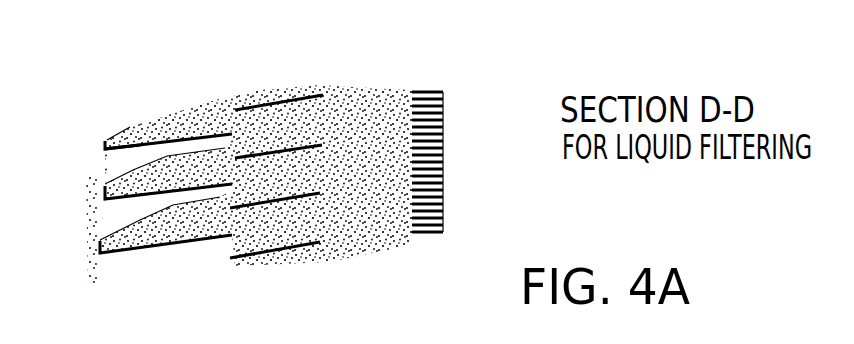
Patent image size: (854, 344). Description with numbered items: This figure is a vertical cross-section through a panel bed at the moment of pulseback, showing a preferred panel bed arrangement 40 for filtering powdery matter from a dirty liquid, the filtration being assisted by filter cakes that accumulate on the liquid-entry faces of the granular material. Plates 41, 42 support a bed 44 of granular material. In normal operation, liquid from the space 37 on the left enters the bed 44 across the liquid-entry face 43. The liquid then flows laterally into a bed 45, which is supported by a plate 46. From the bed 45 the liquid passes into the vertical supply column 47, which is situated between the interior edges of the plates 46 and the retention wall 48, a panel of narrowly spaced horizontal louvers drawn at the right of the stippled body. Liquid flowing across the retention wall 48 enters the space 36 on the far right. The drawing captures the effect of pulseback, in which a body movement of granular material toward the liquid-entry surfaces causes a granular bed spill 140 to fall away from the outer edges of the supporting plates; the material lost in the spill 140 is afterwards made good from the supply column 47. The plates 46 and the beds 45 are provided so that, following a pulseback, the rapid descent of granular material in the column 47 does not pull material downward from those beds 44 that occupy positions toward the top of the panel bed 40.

The panel bed arrangement 40 is at (256, 151).
The plate 41 is at (133, 130).
The plate 42 is at (98, 145).
The liquid-entry face 43 is at (113, 177).
The bed of granular material 44 is at (191, 187).
The bed 45 is at (273, 153).
The plate 46 is at (262, 100).
The vertical supply column 47 is at (256, 201).
The retention wall 48 is at (446, 112).
The space 36 is at (495, 176).
The space 37 is at (48, 171).
The granular bed spill 140 is at (85, 216).